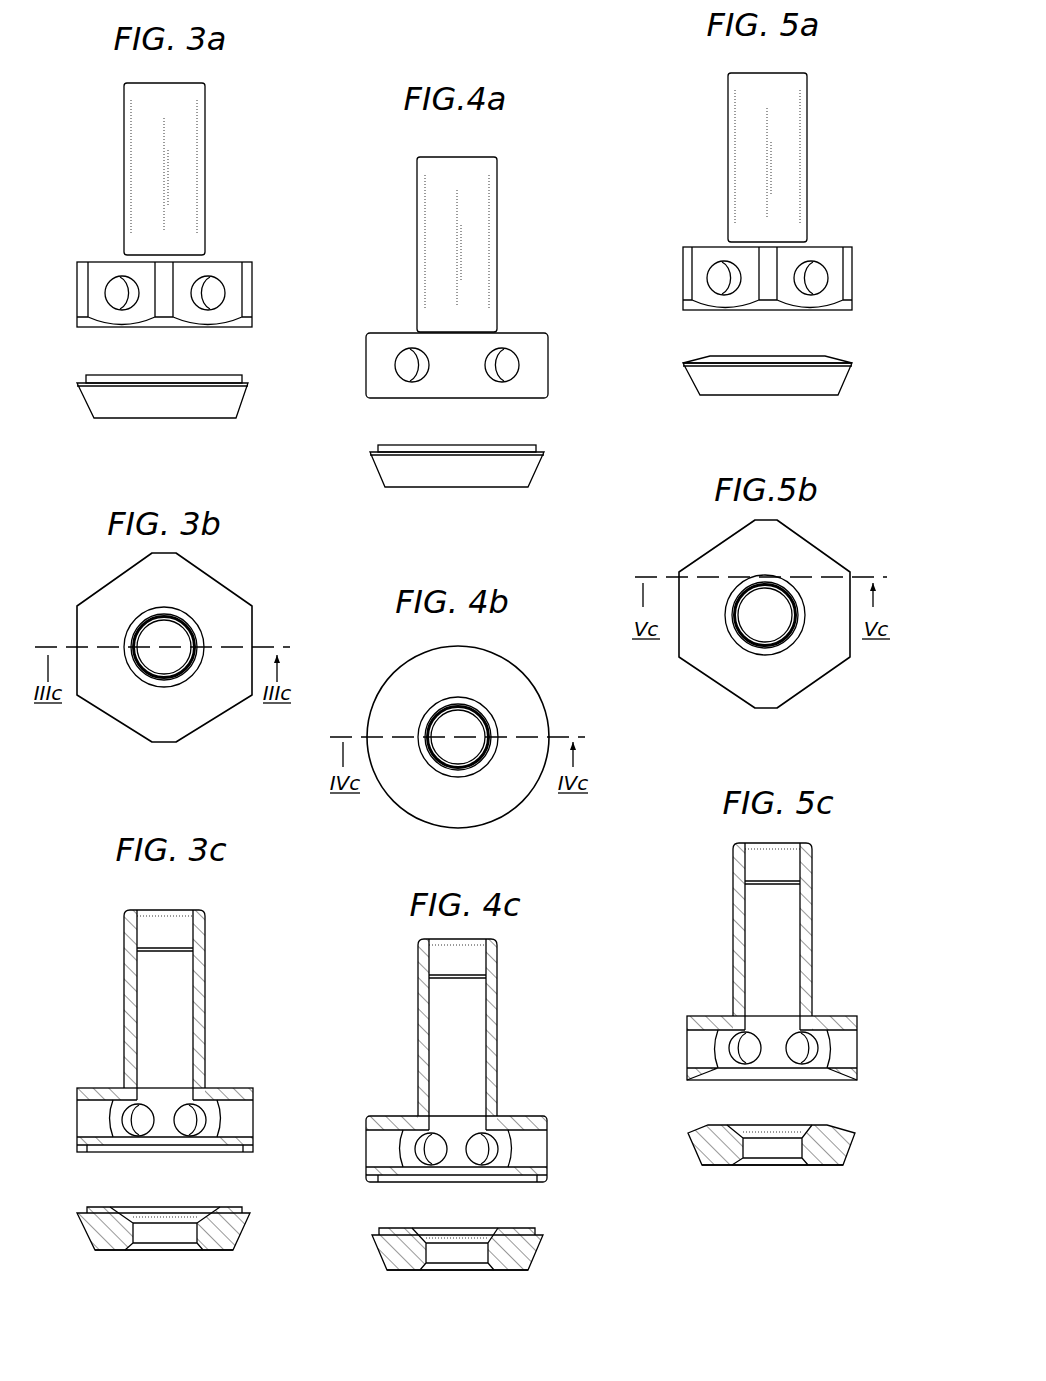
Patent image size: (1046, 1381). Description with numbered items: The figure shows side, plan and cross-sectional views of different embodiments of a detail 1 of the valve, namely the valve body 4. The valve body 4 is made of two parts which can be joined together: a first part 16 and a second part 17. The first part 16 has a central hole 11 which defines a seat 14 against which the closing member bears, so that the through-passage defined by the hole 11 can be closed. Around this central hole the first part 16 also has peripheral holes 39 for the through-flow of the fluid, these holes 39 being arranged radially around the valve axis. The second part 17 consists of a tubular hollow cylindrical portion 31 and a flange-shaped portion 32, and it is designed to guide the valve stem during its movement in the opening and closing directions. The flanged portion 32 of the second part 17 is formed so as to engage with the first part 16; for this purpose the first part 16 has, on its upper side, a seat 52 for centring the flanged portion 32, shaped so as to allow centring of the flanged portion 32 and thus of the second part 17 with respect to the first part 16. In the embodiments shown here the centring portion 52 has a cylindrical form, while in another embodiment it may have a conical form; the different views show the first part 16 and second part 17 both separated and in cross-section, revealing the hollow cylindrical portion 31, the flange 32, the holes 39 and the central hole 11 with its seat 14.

In FIG. 3a, the fastening device 1 is at (166, 249).
In FIG. 4a, the fastening device 1 is at (472, 316).
In FIG. 5a, the fastening device 1 is at (770, 225).
In FIG. 3b, the fastening device 1 is at (253, 578).
In FIG. 4b, the fastening device 1 is at (523, 690).
In FIG. 5b, the fastening device 1 is at (853, 552).
In FIG. 3c, the fastening device 1 is at (148, 1111).
In FIG. 4c, the fastening device 1 is at (445, 1142).
In FIG. 5c, the fastening device 1 is at (766, 1043).
In FIG. 3a, the valve body 4 is at (166, 303).
In FIG. 4a, the valve body 4 is at (472, 357).
In FIG. 5a, the valve body 4 is at (770, 286).
In FIG. 3c, the valve body 4 is at (148, 1206).
In FIG. 4c, the valve body 4 is at (445, 1230).
In FIG. 5c, the valve body 4 is at (766, 1139).
In FIG. 3c, the central hole 11 is at (164, 1287).
In FIG. 4c, the central hole 11 is at (457, 1307).
In FIG. 5c, the central hole 11 is at (772, 1214).
In FIG. 3c, the seat 14 is at (166, 1256).
In FIG. 4c, the seat 14 is at (461, 1274).
In FIG. 5c, the seat 14 is at (763, 1171).
In FIG. 3a, the first part 16 is at (250, 403).
In FIG. 4a, the first part 16 is at (543, 472).
In FIG. 5a, the first part 16 is at (847, 383).
In FIG. 3c, the first part 16 is at (180, 1234).
In FIG. 4c, the first part 16 is at (476, 1257).
In FIG. 5c, the first part 16 is at (794, 1163).
In FIG. 3a, the second part 17 is at (218, 132).
In FIG. 4a, the second part 17 is at (507, 203).
In FIG. 5a, the second part 17 is at (815, 118).
In FIG. 3c, the second part 17 is at (162, 999).
In FIG. 4c, the second part 17 is at (448, 1034).
In FIG. 5c, the second part 17 is at (771, 926).
In FIG. 3c, the hollow cylindrical portion 31 is at (210, 962).
In FIG. 4c, the hollow cylindrical portion 31 is at (500, 1014).
In FIG. 5c, the hollow cylindrical portion 31 is at (817, 892).
In FIG. 3c, the flange-shaped portion 32 is at (93, 1165).
In FIG. 4c, the flange-shaped portion 32 is at (382, 1192).
In FIG. 5c, the flange-shaped portion 32 is at (697, 1085).
In FIG. 3a, the peripheral holes 39 is at (117, 287).
In FIG. 4a, the peripheral holes 39 is at (410, 358).
In FIG. 5a, the peripheral holes 39 is at (720, 273).
In FIG. 3a, the seat for centring 52 is at (225, 368).
In FIG. 4a, the seat for centring 52 is at (523, 438).
In FIG. 5a, the seat for centring 52 is at (830, 350).
In FIG. 3c, the seat for centring 52 is at (233, 1203).
In FIG. 4c, the seat for centring 52 is at (534, 1217).
In FIG. 5c, the seat for centring 52 is at (851, 1134).